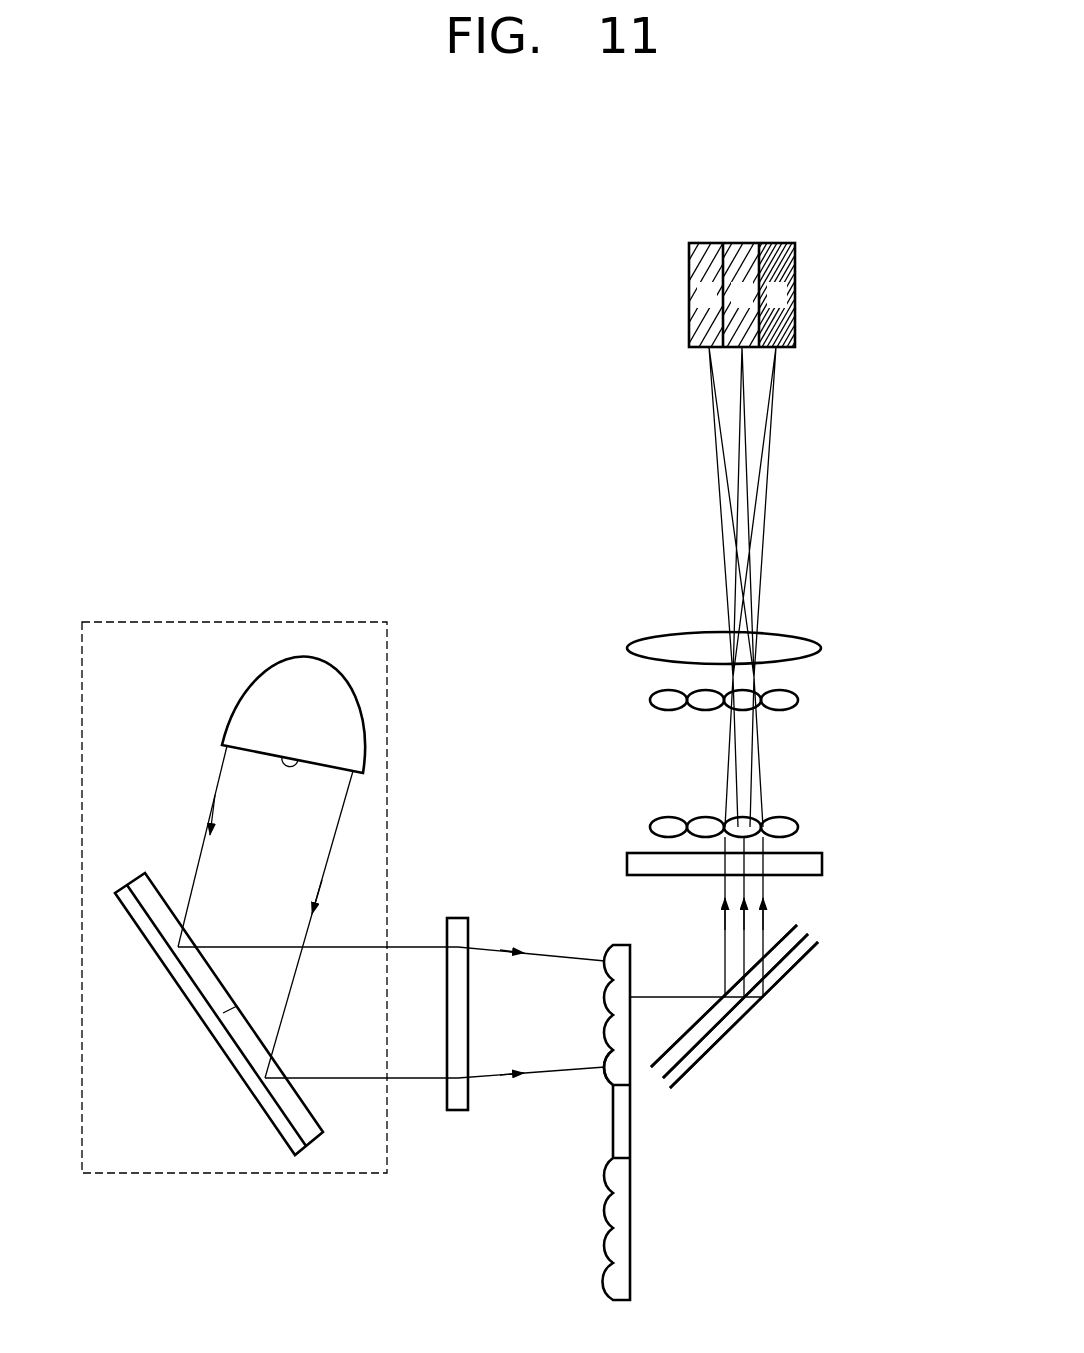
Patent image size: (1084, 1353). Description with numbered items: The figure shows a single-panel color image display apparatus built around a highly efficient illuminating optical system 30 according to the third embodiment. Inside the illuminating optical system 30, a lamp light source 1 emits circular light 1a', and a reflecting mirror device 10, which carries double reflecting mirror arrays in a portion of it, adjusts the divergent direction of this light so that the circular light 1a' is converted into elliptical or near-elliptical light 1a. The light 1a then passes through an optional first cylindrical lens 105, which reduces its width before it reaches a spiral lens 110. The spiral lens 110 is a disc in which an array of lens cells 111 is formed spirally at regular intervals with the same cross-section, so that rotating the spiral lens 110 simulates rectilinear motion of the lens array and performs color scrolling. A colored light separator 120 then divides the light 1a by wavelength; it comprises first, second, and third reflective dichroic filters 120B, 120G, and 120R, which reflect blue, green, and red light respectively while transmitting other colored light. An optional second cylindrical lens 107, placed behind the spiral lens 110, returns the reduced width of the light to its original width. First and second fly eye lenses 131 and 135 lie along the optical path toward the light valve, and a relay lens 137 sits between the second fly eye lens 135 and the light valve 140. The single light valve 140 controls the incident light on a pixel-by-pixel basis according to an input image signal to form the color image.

The lamp light source 1 is at (363, 646).
The elliptical light 1a is at (391, 985).
The circular light 1a' is at (163, 846).
The reflecting mirror device 10 is at (218, 1068).
The illuminating optical system 30 is at (207, 620).
The first cylindrical lens 105 is at (458, 918).
The second cylindrical lens 107 is at (822, 865).
The spiral lens 110 is at (593, 925).
The lens cells 111 is at (605, 1061).
The colored light separator 120 is at (772, 1114).
The third dichroic filter 120R is at (745, 1013).
The second dichroic filter 120G is at (700, 1043).
The first dichroic filter 120B is at (658, 1061).
The first fly eye lens 131 is at (798, 827).
The second fly eye lens 135 is at (798, 700).
The relay lens 137 is at (822, 648).
The light valve 140 is at (633, 338).